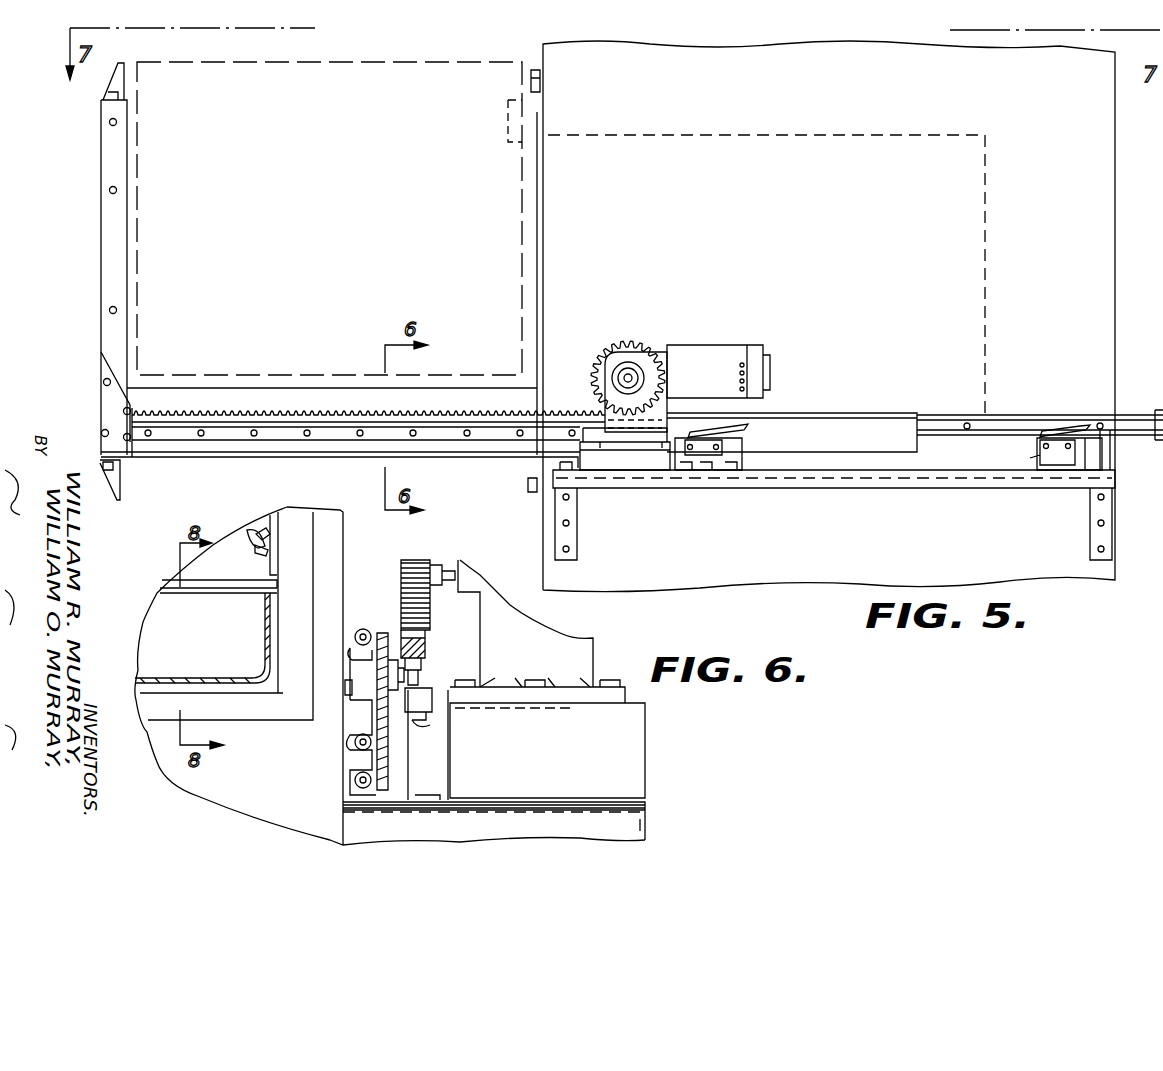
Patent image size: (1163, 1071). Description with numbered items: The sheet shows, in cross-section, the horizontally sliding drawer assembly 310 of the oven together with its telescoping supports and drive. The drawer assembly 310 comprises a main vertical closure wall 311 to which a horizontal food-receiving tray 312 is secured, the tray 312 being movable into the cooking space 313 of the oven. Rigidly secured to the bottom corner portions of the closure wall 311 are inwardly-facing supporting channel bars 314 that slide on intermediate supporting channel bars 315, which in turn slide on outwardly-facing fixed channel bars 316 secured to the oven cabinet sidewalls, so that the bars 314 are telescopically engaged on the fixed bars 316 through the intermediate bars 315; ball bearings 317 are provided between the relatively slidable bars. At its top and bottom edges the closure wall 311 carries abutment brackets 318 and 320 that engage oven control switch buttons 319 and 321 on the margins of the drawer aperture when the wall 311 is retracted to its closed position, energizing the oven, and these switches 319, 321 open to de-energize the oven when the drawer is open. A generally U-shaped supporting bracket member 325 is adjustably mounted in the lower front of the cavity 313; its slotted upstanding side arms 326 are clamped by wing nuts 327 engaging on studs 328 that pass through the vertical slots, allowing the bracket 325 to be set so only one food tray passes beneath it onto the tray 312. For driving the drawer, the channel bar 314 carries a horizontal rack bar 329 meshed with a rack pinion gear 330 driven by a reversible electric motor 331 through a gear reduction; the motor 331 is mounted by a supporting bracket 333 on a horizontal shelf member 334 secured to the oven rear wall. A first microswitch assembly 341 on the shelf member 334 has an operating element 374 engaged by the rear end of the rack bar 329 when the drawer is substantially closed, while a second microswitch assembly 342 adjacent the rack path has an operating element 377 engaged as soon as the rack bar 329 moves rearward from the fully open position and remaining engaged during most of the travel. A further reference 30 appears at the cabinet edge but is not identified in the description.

In FIG. 5, the wall 30 is at (1115, 275).
In FIG. 5, the sliding drawer assembly 310 is at (88, 296).
In FIG. 5, the main vertical closure wall 311 is at (104, 222).
In FIG. 5, the food-receiving tray 312 is at (248, 388).
In FIG. 6, the food-receiving tray 312 is at (226, 676).
In FIG. 5, the cooking space 313 is at (623, 135).
In FIG. 5, the supporting channel bar 314 is at (290, 458).
In FIG. 6, the supporting channel bar 314 is at (383, 632).
In FIG. 5, the intermediate supporting channel bar 315 is at (793, 409).
In FIG. 6, the intermediate supporting channel bar 315 is at (376, 705).
In FIG. 5, the fixed channel bar 316 is at (1010, 416).
In FIG. 6, the fixed channel bar 316 is at (352, 660).
In FIG. 6, the ball bearing 317 is at (361, 630).
In FIG. 5, the abutment bracket 318 is at (110, 88).
In FIG. 5, the oven control switch button 319 is at (541, 88).
In FIG. 5, the abutment bracket 320 is at (112, 490).
In FIG. 5, the oven control switch button 321 is at (532, 494).
In FIG. 6, the supporting bracket member 325 is at (192, 590).
In FIG. 6, the slotted upstanding side arm 326 is at (275, 538).
In FIG. 6, the wing nut 327 is at (262, 530).
In FIG. 6, the stud 328 is at (247, 532).
In FIG. 6, the horizontal rack bar 329 is at (428, 650).
In FIG. 5, the rack pinion gear 330 is at (633, 352).
In FIG. 6, the rack pinion gear 330 is at (422, 562).
In FIG. 5, the electric motor 331 is at (712, 348).
In FIG. 6, the electric motor 331 is at (525, 739).
In FIG. 5, the supporting bracket 333 is at (588, 455).
In FIG. 5, the horizontal shelf member 334 is at (830, 490).
In FIG. 6, the horizontal shelf member 334 is at (645, 820).
In FIG. 5, the first microswitch assembly 341 is at (1057, 466).
In FIG. 5, the second microswitch assembly 342 is at (711, 466).
In FIG. 5, the operating element 374 is at (1068, 425).
In FIG. 5, the operating element 377 is at (746, 425).